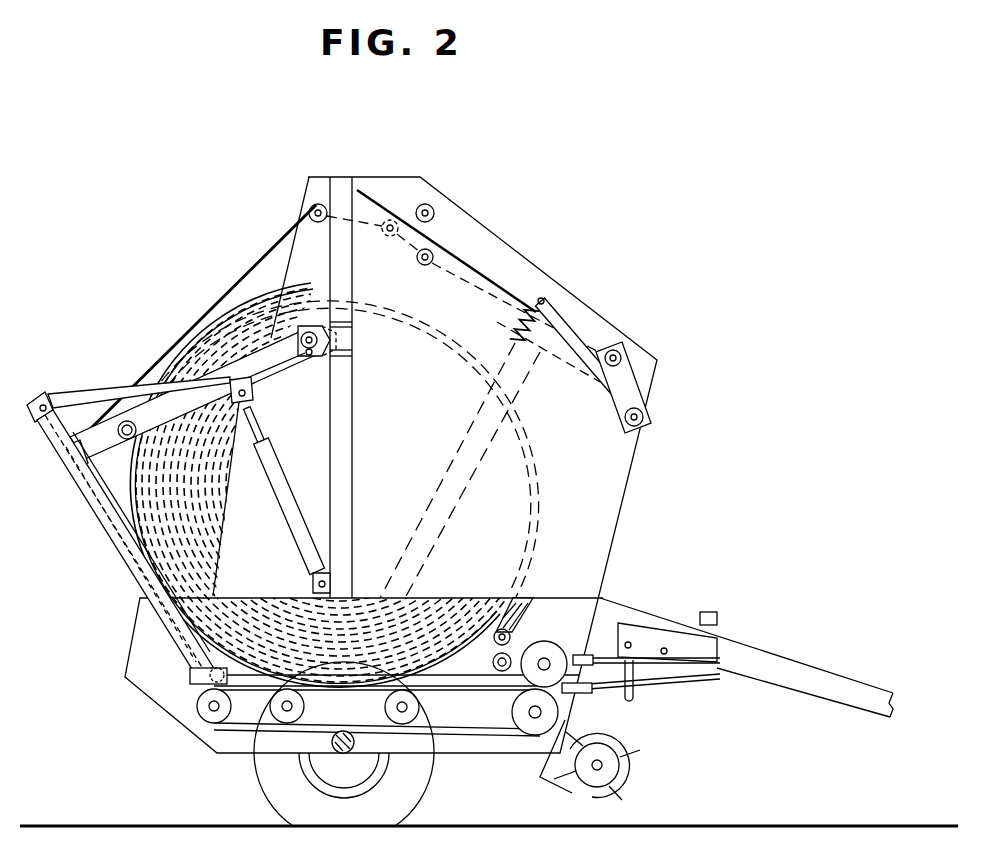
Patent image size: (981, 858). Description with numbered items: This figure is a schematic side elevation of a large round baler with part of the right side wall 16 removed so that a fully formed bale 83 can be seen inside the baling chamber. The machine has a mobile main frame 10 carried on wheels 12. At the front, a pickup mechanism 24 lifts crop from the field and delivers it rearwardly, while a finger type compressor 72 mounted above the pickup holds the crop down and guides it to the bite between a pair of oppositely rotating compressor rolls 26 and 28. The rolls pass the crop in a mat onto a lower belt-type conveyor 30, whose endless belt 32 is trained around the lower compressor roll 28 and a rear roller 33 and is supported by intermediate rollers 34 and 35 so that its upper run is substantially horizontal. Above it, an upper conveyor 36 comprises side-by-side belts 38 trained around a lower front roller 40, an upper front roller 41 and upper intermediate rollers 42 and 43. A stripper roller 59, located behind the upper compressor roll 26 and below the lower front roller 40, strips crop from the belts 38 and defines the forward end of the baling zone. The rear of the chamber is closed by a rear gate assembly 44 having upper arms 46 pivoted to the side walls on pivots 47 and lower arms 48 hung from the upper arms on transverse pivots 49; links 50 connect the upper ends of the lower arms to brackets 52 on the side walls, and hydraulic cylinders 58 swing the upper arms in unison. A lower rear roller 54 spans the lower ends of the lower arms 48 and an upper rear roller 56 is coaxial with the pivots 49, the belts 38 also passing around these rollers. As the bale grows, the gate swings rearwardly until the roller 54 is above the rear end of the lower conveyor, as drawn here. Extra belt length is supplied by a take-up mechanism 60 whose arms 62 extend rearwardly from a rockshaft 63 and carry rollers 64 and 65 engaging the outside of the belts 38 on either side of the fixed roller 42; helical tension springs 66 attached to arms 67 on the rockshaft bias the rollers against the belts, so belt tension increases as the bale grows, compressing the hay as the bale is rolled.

The main frame 10 is at (640, 479).
The wheels 12 is at (413, 787).
The side wall 16 is at (425, 364).
The pickup mechanism 24 is at (633, 785).
The upper compressor roll 26 is at (552, 652).
The lower compressor roll 28 is at (524, 713).
The belt-type conveyor 30 is at (462, 738).
The endless belt 32 is at (300, 730).
The rear roller 33 is at (210, 718).
The intermediate roller 34 is at (418, 707).
The intermediate roller 35 is at (303, 708).
The upper belt-type conveyor 36 is at (566, 517).
The belts 38 is at (566, 488).
The lower front roller 40 is at (498, 594).
The upper front roller 41 is at (622, 350).
The upper intermediate roller 42 is at (433, 209).
The upper intermediate roller 43 is at (309, 209).
The rear gate assembly 44 is at (92, 390).
The upper arms 46 is at (180, 405).
The pivots 47 is at (308, 358).
The lower arms 48 is at (117, 520).
The transverse pivots 49 is at (68, 470).
The links 50 is at (117, 387).
The brackets 52 is at (280, 330).
The lower rear roller 54 is at (194, 672).
The upper rear roller 56 is at (60, 454).
The hydraulic cylinders 58 is at (291, 500).
The stripper roller 59 is at (494, 666).
The belt take-up mechanism 60 is at (565, 304).
The arms 62 is at (548, 355).
The rockshaft 63 is at (645, 414).
The roller 64 is at (433, 253).
The roller 65 is at (392, 220).
The helical tension springs 66 is at (470, 473).
The arms 67 is at (585, 352).
The finger type compressor 72 is at (665, 675).
The bale 83 is at (180, 547).